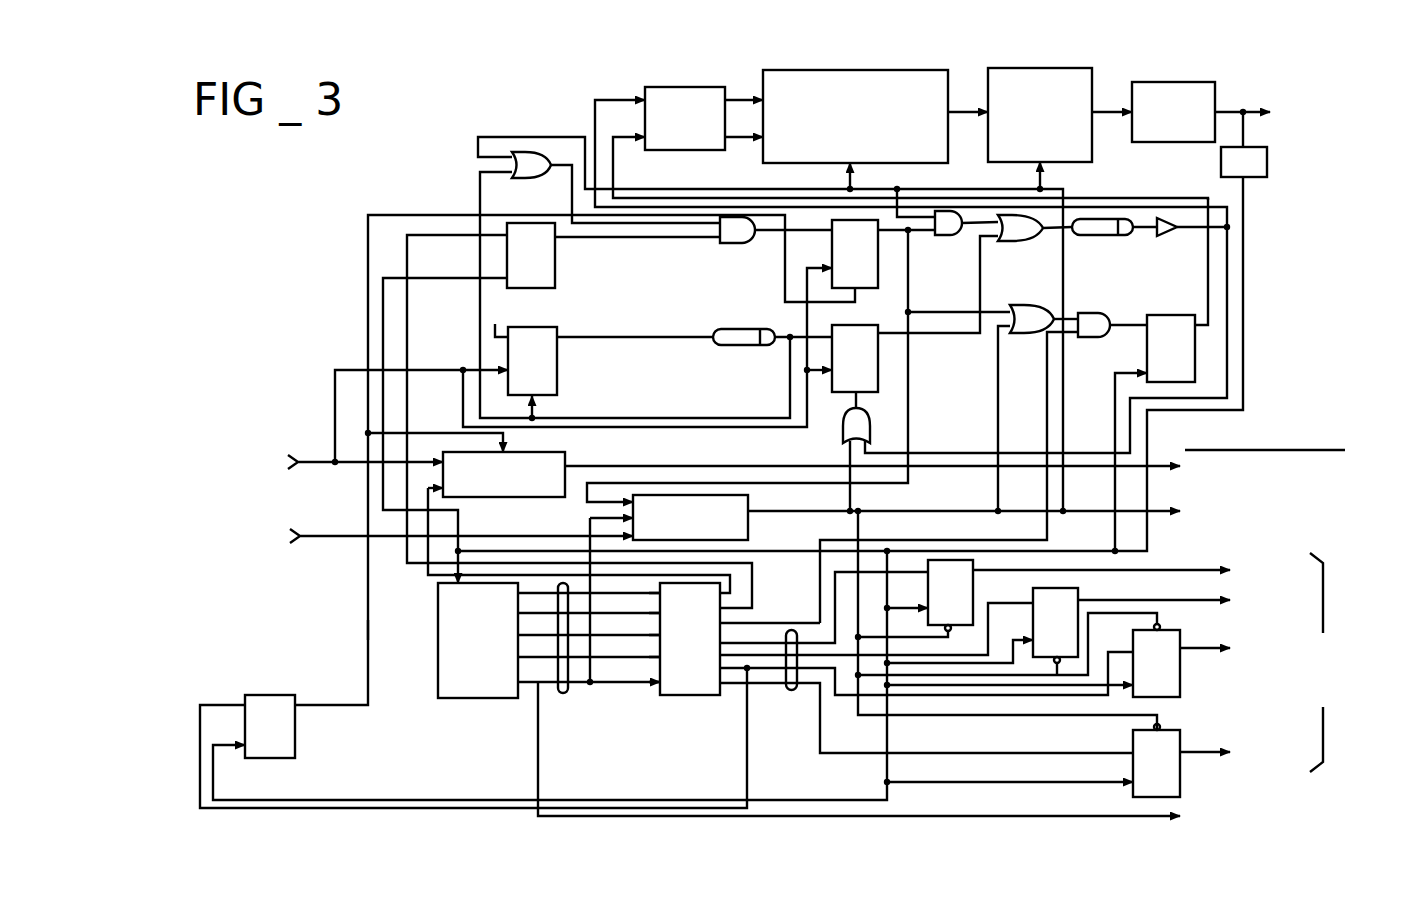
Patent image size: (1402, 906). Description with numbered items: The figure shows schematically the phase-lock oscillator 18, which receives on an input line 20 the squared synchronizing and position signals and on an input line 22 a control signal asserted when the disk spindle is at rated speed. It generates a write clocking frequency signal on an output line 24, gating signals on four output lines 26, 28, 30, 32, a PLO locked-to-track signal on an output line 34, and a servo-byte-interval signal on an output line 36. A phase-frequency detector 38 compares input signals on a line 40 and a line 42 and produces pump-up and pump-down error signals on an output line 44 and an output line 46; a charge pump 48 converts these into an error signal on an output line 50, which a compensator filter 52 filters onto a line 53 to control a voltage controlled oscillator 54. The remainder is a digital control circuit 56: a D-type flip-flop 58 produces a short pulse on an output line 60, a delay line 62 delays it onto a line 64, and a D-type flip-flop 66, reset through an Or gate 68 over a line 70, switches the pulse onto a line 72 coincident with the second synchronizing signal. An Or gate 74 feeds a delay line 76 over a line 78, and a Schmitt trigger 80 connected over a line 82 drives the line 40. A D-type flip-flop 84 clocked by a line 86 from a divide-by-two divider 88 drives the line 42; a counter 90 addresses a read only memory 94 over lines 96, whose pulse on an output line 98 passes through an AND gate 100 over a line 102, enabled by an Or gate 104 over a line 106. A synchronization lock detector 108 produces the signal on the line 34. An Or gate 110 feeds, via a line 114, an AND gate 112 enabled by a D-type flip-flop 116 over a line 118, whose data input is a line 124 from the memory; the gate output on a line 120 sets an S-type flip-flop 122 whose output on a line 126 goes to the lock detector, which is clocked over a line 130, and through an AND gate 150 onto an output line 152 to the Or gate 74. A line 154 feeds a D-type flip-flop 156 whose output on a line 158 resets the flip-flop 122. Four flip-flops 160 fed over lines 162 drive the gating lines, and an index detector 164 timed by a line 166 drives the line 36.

The phase-lock oscillator 18 is at (490, 121).
The input line 20 is at (312, 460).
The input line 22 is at (328, 540).
The output line 24 is at (1250, 110).
The output line 26 is at (1188, 568).
The output line 28 is at (1163, 598).
The output line 30 is at (1190, 652).
The output line 32 is at (1192, 756).
The output line 34 is at (1150, 508).
The output line 36 is at (1148, 462).
The phase-frequency detector 38 is at (648, 92).
The line 40 is at (1220, 196).
The line 42 is at (1195, 184).
The output line 44 is at (745, 99).
The output line 46 is at (735, 140).
The charge pump 48 is at (925, 165).
The output line 50 is at (955, 111).
The compensator filter 52 is at (1080, 165).
The line 53 is at (1104, 115).
The voltage controlled oscillator 54 is at (1188, 85).
The digital control circuit 56 is at (452, 197).
The D-type flip-flop 58 is at (541, 326).
The output line 60 is at (590, 338).
The delay line 62 is at (718, 346).
The line 64 is at (788, 376).
The D-type flip-flop 66 is at (880, 378).
The Or gate 68 is at (840, 430).
The line 70 is at (845, 410).
The line 72 is at (918, 335).
The Or gate 74 is at (1040, 236).
The delay line 76 is at (1114, 236).
The line 78 is at (1056, 240).
The Schmitt trigger 80 is at (1160, 237).
The line 82 is at (1143, 229).
The D-type flip-flop 84 is at (1146, 352).
The line 86 is at (1246, 243).
The divide-by-two divider 88 is at (1267, 163).
The counter 90 is at (460, 700).
The read only memory 94 is at (688, 700).
The lines 96 is at (565, 694).
The output line 98 is at (1020, 574).
The AND gate 100 is at (1098, 340).
The line 102 is at (1133, 320).
The Or gate 104 is at (1024, 308).
The line 106 is at (1068, 314).
The synchronization lock detector 108 is at (750, 505).
The Or gate 110 is at (524, 176).
The AND gate 112 is at (732, 245).
The line 114 is at (570, 190).
The D-type flip-flop 116 is at (557, 270).
The line 118 is at (635, 240).
The line 120 is at (782, 238).
The S-type flip-flop 122 is at (831, 243).
The line 124 is at (458, 240).
The line 126 is at (883, 272).
The line 130 is at (1050, 790).
The AND gate 150 is at (954, 236).
The output line 152 is at (975, 250).
The line 154 is at (744, 760).
The D-type flip-flop 156 is at (273, 693).
The line 158 is at (366, 630).
The flip-flops 160 is at (1195, 702).
The lines 162 is at (792, 692).
The index detector 164 is at (568, 462).
The line 166 is at (440, 500).